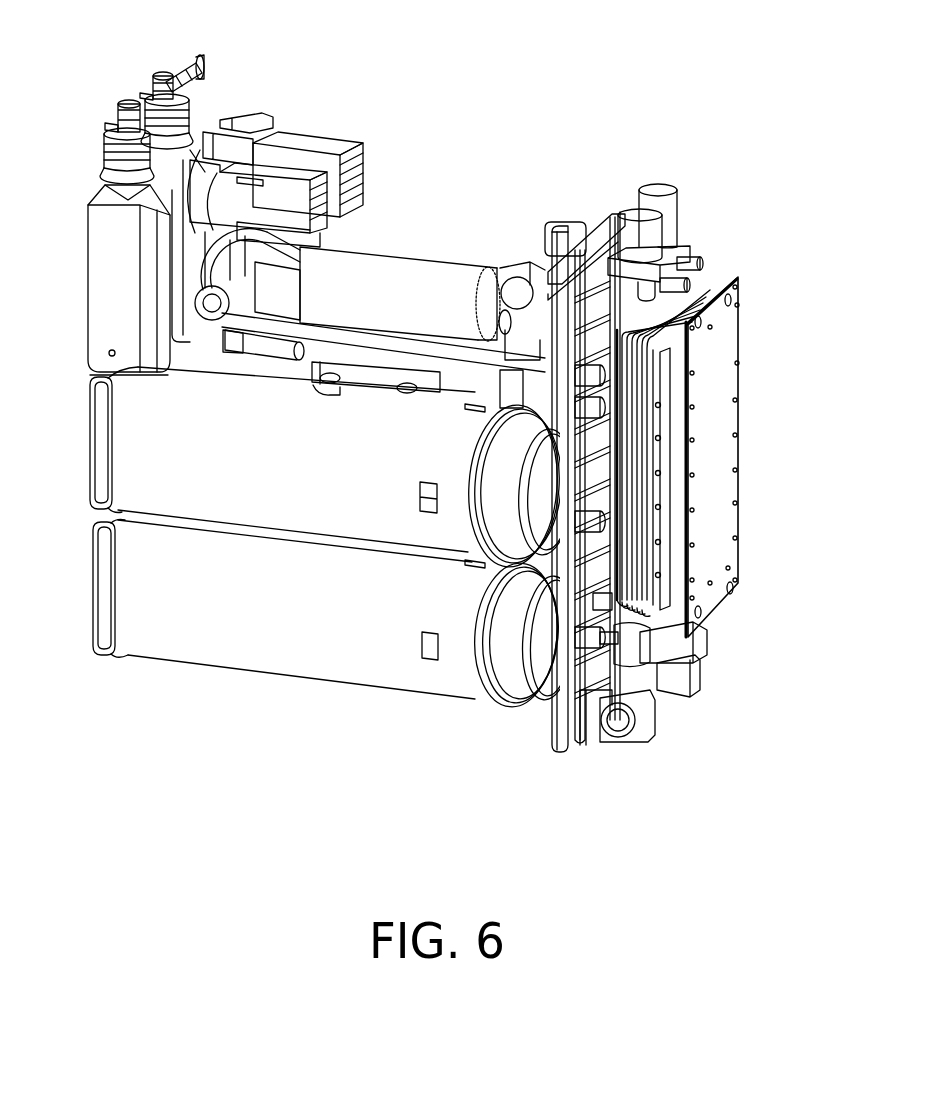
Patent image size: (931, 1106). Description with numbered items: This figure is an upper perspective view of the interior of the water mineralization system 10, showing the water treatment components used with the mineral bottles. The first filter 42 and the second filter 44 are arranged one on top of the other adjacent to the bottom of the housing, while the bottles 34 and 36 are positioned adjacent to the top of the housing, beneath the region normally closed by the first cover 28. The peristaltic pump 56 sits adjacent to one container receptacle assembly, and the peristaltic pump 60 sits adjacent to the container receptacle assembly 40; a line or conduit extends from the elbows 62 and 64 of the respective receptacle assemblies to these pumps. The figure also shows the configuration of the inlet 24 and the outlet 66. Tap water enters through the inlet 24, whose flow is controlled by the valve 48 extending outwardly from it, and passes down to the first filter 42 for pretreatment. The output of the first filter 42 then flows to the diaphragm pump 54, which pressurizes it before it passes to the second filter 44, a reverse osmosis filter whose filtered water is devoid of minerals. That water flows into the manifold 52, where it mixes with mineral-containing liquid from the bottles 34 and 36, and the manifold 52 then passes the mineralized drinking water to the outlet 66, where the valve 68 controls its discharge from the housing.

The water mineralization system 10 is at (778, 256).
The inlet 24 is at (687, 287).
The first cover 28 is at (102, 160).
The bottle 34 is at (100, 267).
The bottle 36 is at (213, 133).
The container receptacle assembly 40 is at (185, 107).
The first filter 42 is at (310, 658).
The second filter 44 is at (342, 466).
The valve 48 is at (628, 203).
The manifold 52 is at (728, 418).
The diaphragm pump 54 is at (428, 265).
The peristaltic pump 56 is at (258, 203).
The peristaltic pump 60 is at (345, 138).
The elbow 62 is at (150, 98).
The elbow 64 is at (168, 67).
The outlet 66 is at (695, 257).
The valve 68 is at (662, 188).